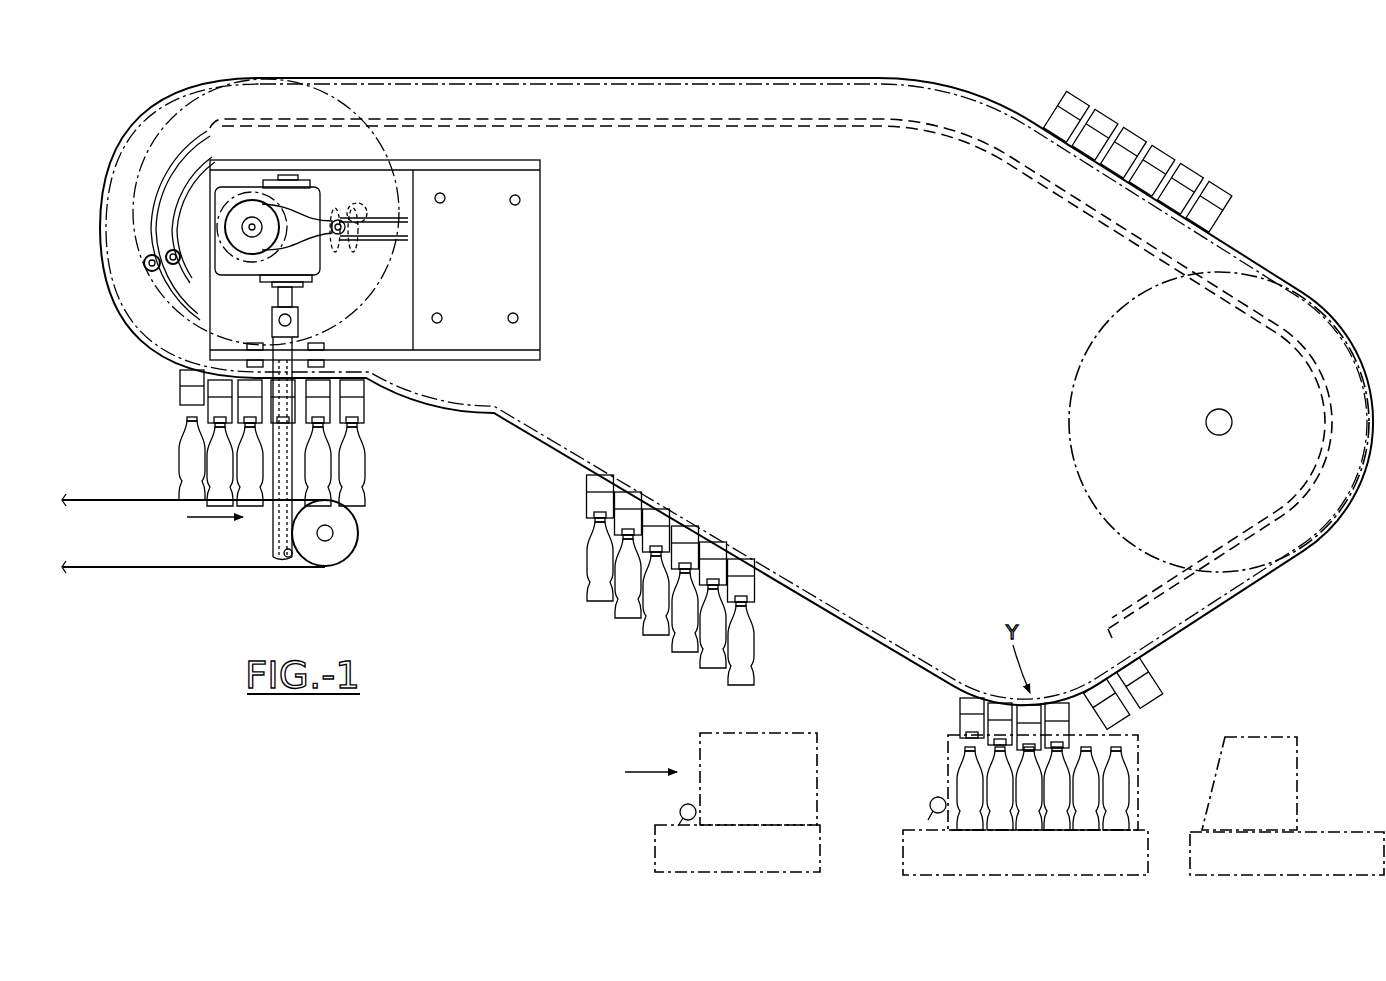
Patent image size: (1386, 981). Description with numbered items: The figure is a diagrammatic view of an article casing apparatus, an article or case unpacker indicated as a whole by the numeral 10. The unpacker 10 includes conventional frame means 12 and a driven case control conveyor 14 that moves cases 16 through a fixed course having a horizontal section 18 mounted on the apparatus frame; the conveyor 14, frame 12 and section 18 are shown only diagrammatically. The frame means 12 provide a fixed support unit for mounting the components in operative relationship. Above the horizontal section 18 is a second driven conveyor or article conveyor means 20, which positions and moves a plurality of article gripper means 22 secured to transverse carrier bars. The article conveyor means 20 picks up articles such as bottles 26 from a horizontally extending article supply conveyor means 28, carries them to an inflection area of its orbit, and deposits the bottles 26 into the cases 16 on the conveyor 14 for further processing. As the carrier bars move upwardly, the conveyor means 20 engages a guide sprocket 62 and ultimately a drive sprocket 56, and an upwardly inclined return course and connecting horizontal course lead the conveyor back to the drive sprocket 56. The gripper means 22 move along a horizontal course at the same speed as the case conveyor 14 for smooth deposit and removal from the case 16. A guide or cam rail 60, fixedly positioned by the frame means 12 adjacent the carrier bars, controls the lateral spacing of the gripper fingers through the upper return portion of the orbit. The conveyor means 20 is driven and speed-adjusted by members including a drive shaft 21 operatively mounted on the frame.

The article unpacker 10 is at (546, 477).
The frame means 12 is at (895, 401).
The case control conveyor 14 is at (655, 845).
The cases 16 is at (786, 733).
The horizontal section 18 is at (1312, 832).
The article conveyor means 20 is at (843, 612).
The drive shaft 21 is at (273, 540).
The article gripper means 22 is at (1236, 202).
The bottles 26 is at (362, 465).
The article supply conveyor means 28 is at (115, 497).
The drive sprocket 56 is at (343, 104).
The guide 60 is at (745, 128).
The guide sprocket 62 is at (1088, 497).